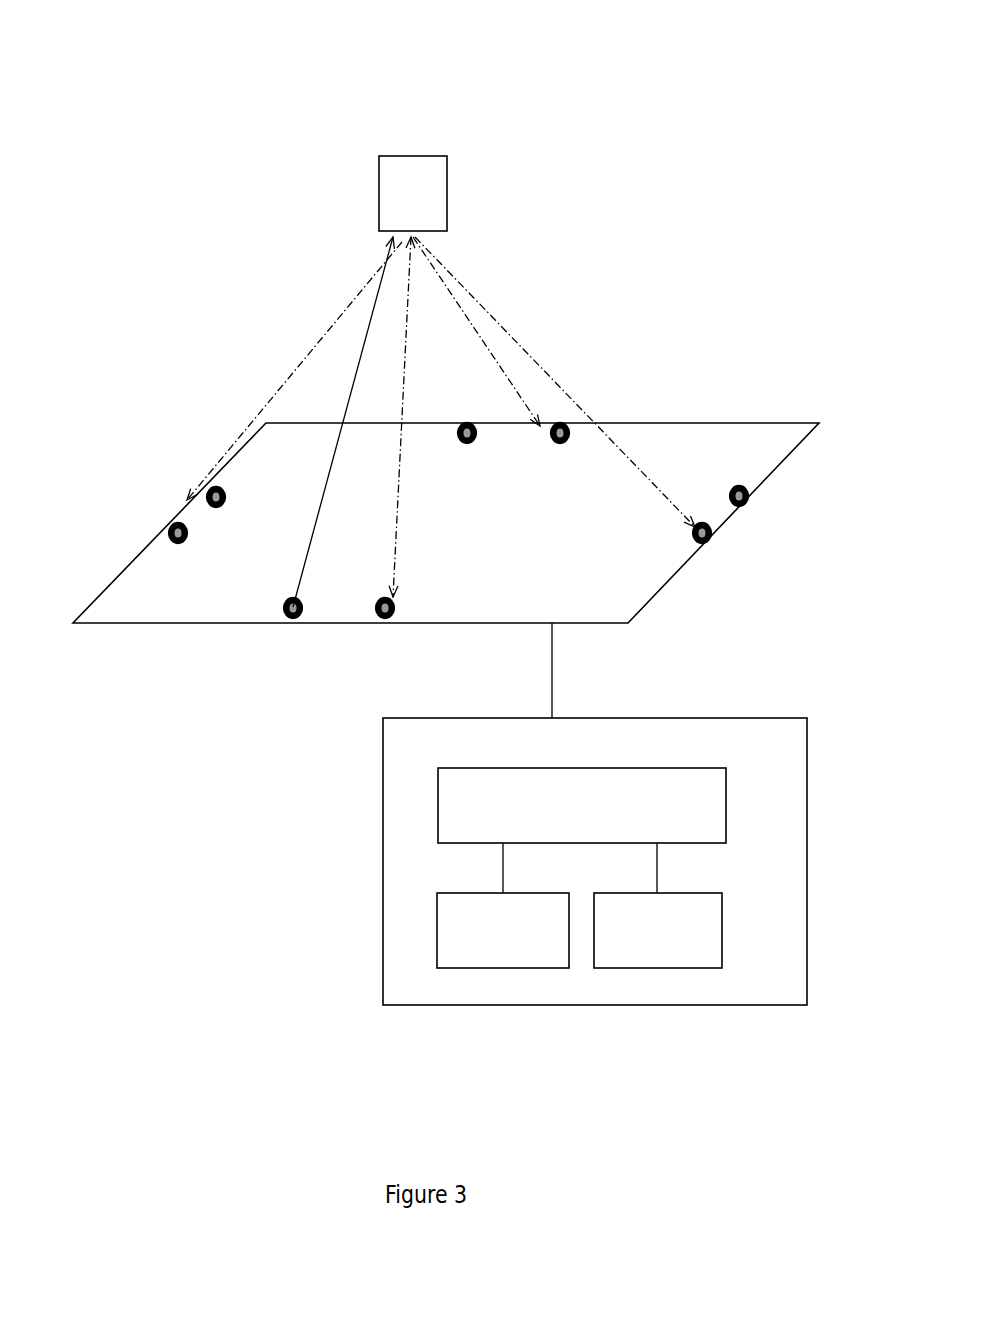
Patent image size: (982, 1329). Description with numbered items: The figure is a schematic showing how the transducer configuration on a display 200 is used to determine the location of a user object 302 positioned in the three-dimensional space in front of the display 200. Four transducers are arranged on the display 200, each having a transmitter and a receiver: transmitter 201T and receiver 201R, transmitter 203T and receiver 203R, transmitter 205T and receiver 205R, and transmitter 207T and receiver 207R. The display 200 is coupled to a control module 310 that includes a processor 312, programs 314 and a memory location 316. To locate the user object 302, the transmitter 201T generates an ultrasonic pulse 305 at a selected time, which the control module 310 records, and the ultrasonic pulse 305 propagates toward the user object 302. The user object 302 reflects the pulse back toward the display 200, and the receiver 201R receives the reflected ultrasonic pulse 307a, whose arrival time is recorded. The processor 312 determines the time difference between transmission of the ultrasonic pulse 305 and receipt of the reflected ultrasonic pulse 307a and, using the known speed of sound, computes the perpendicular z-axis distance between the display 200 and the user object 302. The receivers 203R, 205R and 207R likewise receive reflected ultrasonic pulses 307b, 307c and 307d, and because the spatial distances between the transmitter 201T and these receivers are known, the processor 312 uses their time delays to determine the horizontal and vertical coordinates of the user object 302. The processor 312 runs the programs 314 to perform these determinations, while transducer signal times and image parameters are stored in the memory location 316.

The user object 302 is at (393, 156).
The display 200 is at (700, 420).
The transmitter 203T is at (169, 488).
The receiver 203R is at (126, 536).
The transmitter 201T is at (289, 636).
The receiver 201R is at (388, 636).
The transmitter 205T is at (463, 458).
The receiver 205R is at (551, 457).
The transmitter 207T is at (777, 502).
The receiver 207R is at (733, 551).
The ultrasonic pulse 305 is at (320, 518).
The reflected ultrasonic pulse 307a is at (398, 520).
The reflected ultrasonic pulse 307b is at (287, 383).
The reflected ultrasonic pulse 307c is at (493, 357).
The reflected ultrasonic pulse 307d is at (562, 395).
The control module 310 is at (383, 848).
The processor 312 is at (657, 767).
The programs 314 is at (504, 968).
The memory location 316 is at (664, 968).